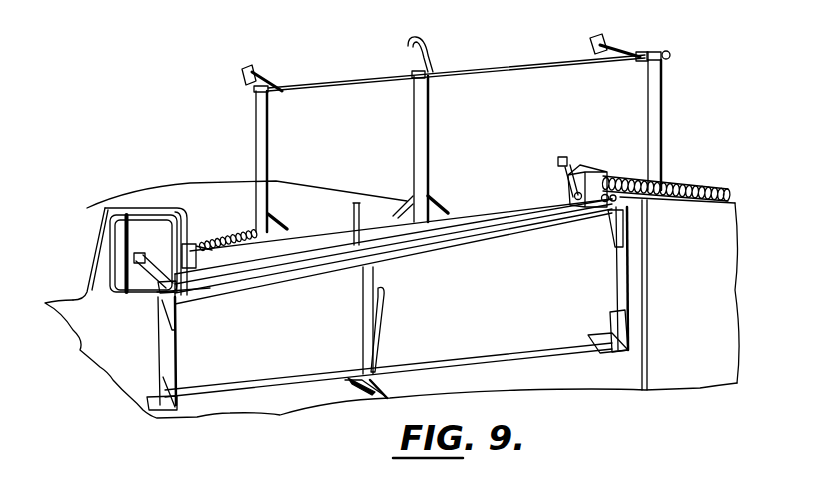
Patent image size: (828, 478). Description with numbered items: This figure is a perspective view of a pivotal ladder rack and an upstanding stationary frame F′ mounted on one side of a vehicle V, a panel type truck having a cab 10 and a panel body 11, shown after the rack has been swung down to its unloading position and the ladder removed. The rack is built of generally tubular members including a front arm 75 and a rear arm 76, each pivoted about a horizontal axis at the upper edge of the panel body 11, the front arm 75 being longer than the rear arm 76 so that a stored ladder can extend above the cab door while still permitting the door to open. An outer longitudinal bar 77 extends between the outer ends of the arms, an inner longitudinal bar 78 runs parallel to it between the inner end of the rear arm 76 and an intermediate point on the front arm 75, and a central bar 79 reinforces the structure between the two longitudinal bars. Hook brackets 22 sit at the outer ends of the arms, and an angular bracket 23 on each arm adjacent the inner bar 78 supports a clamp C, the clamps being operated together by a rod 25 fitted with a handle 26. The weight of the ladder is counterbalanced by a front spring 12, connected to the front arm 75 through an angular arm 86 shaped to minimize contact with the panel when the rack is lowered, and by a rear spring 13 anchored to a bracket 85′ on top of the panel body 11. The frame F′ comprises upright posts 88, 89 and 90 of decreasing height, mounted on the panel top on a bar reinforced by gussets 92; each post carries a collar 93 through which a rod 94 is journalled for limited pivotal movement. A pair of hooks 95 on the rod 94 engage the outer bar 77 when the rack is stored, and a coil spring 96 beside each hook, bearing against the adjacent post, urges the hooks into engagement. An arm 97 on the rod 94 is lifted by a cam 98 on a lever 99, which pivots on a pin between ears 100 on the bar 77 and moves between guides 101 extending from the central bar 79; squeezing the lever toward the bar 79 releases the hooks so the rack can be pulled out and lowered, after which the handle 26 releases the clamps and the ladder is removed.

The cab 10 is at (100, 209).
The vehicle V is at (168, 190).
The panel body 11 is at (724, 376).
The front spring 12 is at (228, 238).
The rear spring 13 is at (671, 182).
The hook brackets 22 is at (148, 396).
The angular bracket 23 is at (175, 310).
The rod 25 is at (319, 244).
The handle 26 is at (352, 207).
The front arm 75 is at (177, 363).
The rear arm 76 is at (616, 272).
The outer longitudinal bar 77 is at (481, 343).
The inner longitudinal bar 78 is at (440, 247).
The bar 79 is at (363, 350).
The bracket 85′ is at (734, 204).
The angular arm 86 is at (200, 260).
The upright post 88 is at (256, 163).
The upright post 89 is at (416, 120).
The upright post 90 is at (648, 80).
The gussets 92 is at (287, 230).
The collar 93 is at (255, 90).
The rod 94 is at (503, 62).
The hooks 95 is at (252, 68).
The coil spring 96 is at (272, 92).
The arm 97 is at (426, 52).
The cam 98 is at (356, 398).
The lever 99 is at (384, 336).
The ears 100 is at (384, 393).
The guides 101 is at (380, 354).
The clamp C is at (153, 287).
The connector C′ is at (594, 164).
The frame F′ is at (662, 82).